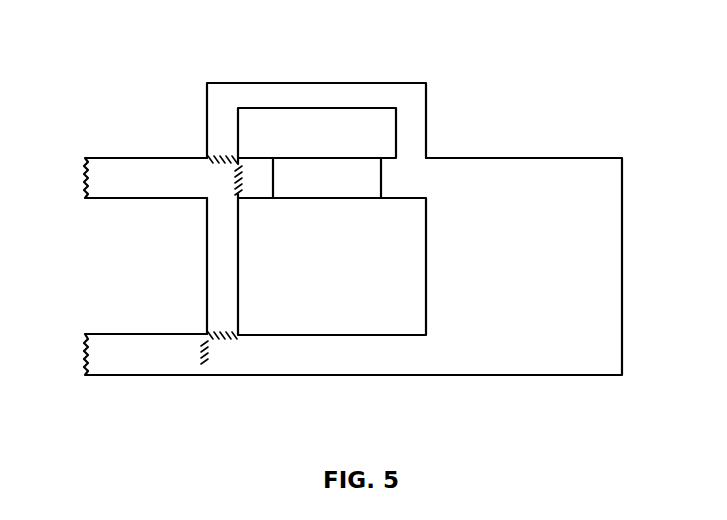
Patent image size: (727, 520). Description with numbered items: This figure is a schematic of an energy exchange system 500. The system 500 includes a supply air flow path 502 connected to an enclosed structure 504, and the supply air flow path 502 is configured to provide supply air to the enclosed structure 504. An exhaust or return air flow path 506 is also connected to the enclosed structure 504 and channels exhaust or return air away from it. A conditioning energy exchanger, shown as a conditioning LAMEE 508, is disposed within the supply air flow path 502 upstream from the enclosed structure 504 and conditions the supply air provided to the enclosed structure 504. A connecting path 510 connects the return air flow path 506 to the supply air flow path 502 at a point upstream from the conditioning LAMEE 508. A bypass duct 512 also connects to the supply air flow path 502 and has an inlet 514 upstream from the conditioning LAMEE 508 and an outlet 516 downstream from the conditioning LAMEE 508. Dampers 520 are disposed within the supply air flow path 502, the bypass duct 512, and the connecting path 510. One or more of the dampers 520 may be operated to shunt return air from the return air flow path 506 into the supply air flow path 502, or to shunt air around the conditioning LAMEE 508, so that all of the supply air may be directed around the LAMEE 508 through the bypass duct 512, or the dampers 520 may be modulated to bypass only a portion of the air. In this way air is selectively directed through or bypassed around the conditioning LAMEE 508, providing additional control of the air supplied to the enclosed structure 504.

The energy exchange system 500 is at (142, 63).
The supply air flow path 502 is at (255, 192).
The enclosed structure 504 is at (547, 227).
The return air flow path 506 is at (372, 347).
The conditioning LAMEE 508 is at (327, 193).
The connecting path 510 is at (217, 272).
The bypass duct 512 is at (332, 90).
The inlet 514 is at (215, 141).
The outlet 516 is at (413, 123).
The dampers 520 is at (234, 157).